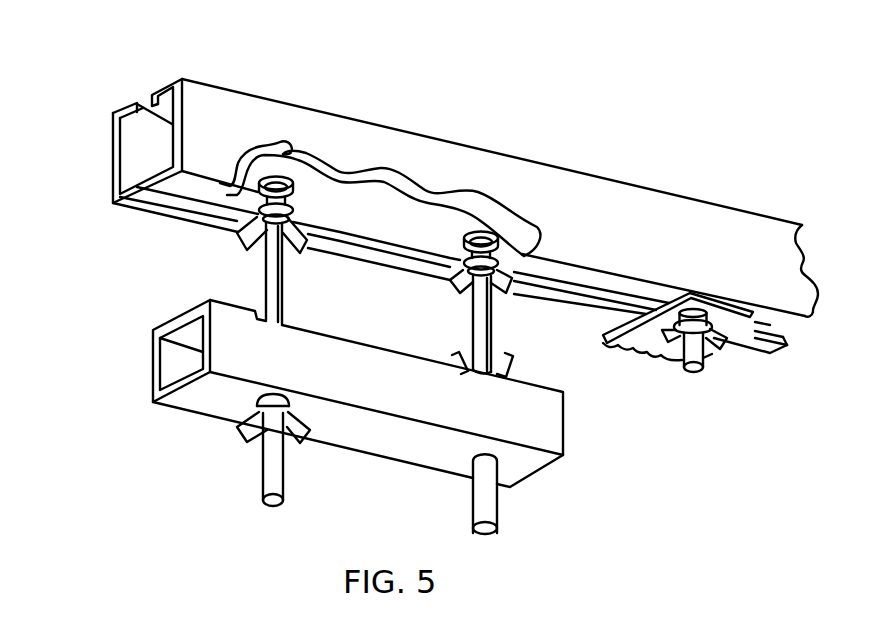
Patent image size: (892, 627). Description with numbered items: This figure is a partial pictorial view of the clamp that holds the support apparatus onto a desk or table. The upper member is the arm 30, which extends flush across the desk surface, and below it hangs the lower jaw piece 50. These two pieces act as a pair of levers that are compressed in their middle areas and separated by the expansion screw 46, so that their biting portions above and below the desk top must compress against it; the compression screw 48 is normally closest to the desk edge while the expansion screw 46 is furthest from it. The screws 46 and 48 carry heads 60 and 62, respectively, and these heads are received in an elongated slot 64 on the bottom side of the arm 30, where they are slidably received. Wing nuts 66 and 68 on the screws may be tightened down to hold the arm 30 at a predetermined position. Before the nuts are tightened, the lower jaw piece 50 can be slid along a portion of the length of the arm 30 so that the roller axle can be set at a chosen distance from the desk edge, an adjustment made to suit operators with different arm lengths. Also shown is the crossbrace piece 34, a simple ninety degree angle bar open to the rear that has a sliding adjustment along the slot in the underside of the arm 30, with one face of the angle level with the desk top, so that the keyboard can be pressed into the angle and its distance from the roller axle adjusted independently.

The arm 30 is at (557, 168).
The elongated slot 64 is at (582, 287).
The crossbrace piece 34 is at (656, 360).
The head 60 is at (276, 177).
The head 62 is at (479, 232).
The wing nut 66 is at (262, 236).
The wing nut 68 is at (470, 290).
The compression screw 48 is at (265, 265).
The expansion screw 46 is at (495, 328).
The lower jaw piece 50 is at (194, 412).